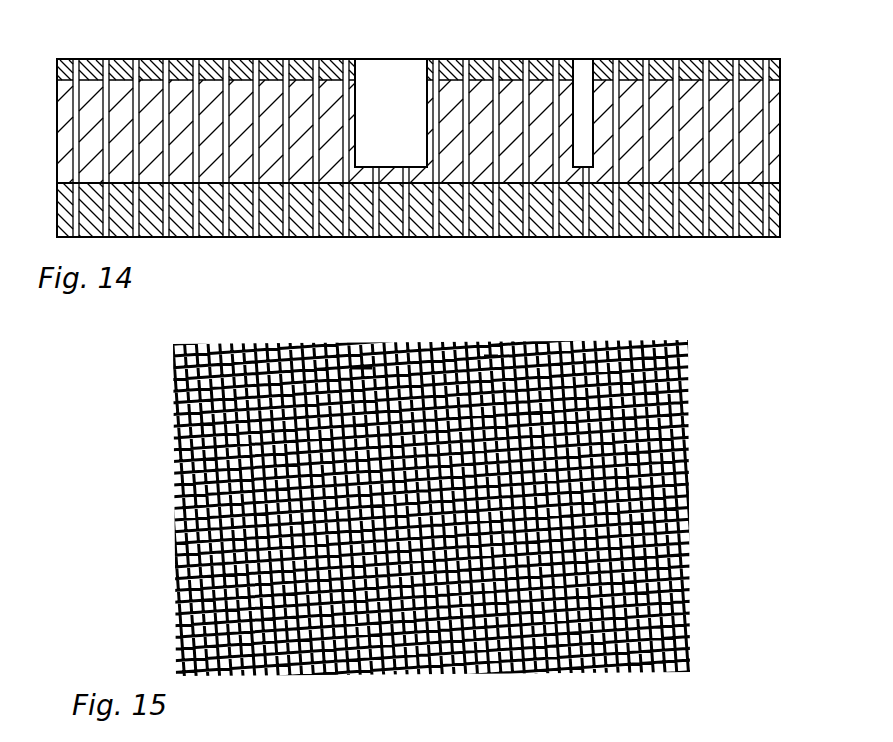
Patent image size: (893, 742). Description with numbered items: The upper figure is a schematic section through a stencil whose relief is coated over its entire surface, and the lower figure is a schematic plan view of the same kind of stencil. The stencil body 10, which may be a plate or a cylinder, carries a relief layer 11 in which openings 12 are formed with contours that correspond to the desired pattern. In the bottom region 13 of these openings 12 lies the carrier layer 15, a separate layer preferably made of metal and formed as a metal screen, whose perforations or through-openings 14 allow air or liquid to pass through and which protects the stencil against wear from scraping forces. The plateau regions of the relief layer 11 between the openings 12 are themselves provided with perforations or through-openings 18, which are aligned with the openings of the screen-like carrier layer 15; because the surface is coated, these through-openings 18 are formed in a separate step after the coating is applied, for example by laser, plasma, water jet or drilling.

In FIG. 14, the stencil body 10 is at (712, 46).
In FIG. 14, the relief layer 11 is at (652, 95).
In FIG. 14, the openings 12 is at (385, 90).
In FIG. 15, the openings 12 is at (258, 462).
In FIG. 14, the bottom region 13 is at (364, 170).
In FIG. 14, the through-openings 14 is at (406, 213).
In FIG. 15, the through-openings 14 is at (495, 355).
In FIG. 14, the carrier layer 15 is at (743, 217).
In FIG. 14, the through-openings 18 is at (143, 110).
In FIG. 15, the through-openings 18 is at (369, 368).